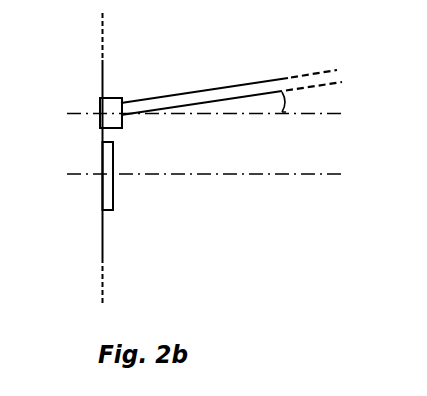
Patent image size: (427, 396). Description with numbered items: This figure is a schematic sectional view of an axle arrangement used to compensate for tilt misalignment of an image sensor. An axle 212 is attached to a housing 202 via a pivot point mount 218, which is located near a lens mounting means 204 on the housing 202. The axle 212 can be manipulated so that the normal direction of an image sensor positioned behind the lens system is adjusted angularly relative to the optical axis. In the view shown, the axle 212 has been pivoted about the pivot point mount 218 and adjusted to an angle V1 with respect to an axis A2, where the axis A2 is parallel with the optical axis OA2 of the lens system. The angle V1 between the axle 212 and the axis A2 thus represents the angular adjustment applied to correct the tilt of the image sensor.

The housing 202 is at (100, 243).
The lens mounting means 204 is at (113, 211).
The axle 212 is at (216, 88).
The pivot point mount 218 is at (108, 97).
The axis A2 is at (310, 113).
The angle V1 is at (285, 103).
The optical axis OA2 is at (292, 176).